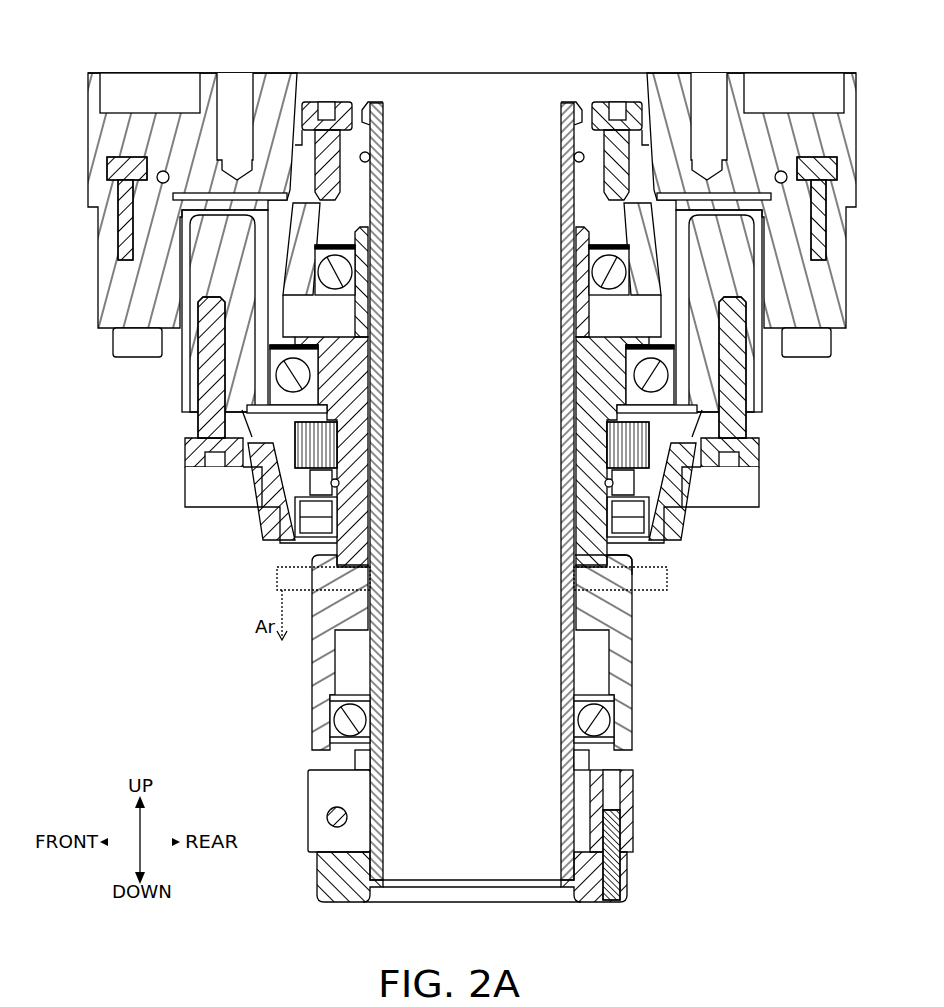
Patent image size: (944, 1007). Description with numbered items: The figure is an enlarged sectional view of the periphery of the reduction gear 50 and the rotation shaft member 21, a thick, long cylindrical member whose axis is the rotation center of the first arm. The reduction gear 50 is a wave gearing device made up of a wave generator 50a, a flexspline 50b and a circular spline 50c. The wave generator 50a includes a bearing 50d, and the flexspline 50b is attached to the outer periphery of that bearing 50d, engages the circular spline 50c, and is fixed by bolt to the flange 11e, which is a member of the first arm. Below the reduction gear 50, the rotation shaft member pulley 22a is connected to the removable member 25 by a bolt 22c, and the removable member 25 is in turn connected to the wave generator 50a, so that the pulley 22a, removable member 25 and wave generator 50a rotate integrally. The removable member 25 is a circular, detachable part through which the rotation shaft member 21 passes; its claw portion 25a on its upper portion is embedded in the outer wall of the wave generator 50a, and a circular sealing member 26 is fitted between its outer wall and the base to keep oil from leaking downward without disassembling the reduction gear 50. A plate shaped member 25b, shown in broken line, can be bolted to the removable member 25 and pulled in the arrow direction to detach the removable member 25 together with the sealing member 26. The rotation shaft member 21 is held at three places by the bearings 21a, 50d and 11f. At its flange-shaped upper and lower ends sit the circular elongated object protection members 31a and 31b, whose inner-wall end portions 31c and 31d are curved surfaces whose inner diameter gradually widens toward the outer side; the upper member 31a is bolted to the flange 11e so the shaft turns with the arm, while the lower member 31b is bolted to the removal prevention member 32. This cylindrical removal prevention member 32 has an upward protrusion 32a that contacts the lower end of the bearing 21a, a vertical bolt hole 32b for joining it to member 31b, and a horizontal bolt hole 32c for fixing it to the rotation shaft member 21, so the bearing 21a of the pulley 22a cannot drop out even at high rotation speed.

The flange 11e is at (90, 72).
The bearings 11f is at (612, 272).
The elongated object protection member 31a is at (366, 103).
The elongated object protection member 31b is at (372, 893).
The portion 31c is at (563, 103).
The portion 31d is at (567, 893).
The reduction gear 50 is at (135, 542).
The wave generator 50a is at (348, 400).
The flexspline 50b is at (263, 400).
The circular spline 50c is at (192, 393).
The bearing 50d is at (652, 375).
The sealing member 26 is at (317, 527).
The removable member 25 is at (620, 577).
The claw portion 25a is at (612, 565).
The plate shaped member 25b is at (300, 515).
The rotation shaft member pulley 22a is at (312, 702).
The bolt 22c is at (602, 647).
The rotation shaft member 21 is at (580, 667).
The bearing 21a is at (343, 720).
The removal prevention member 32 is at (318, 848).
The protrusion 32a is at (587, 765).
The bolt hole 32b is at (615, 792).
The bolt hole 32c is at (325, 807).